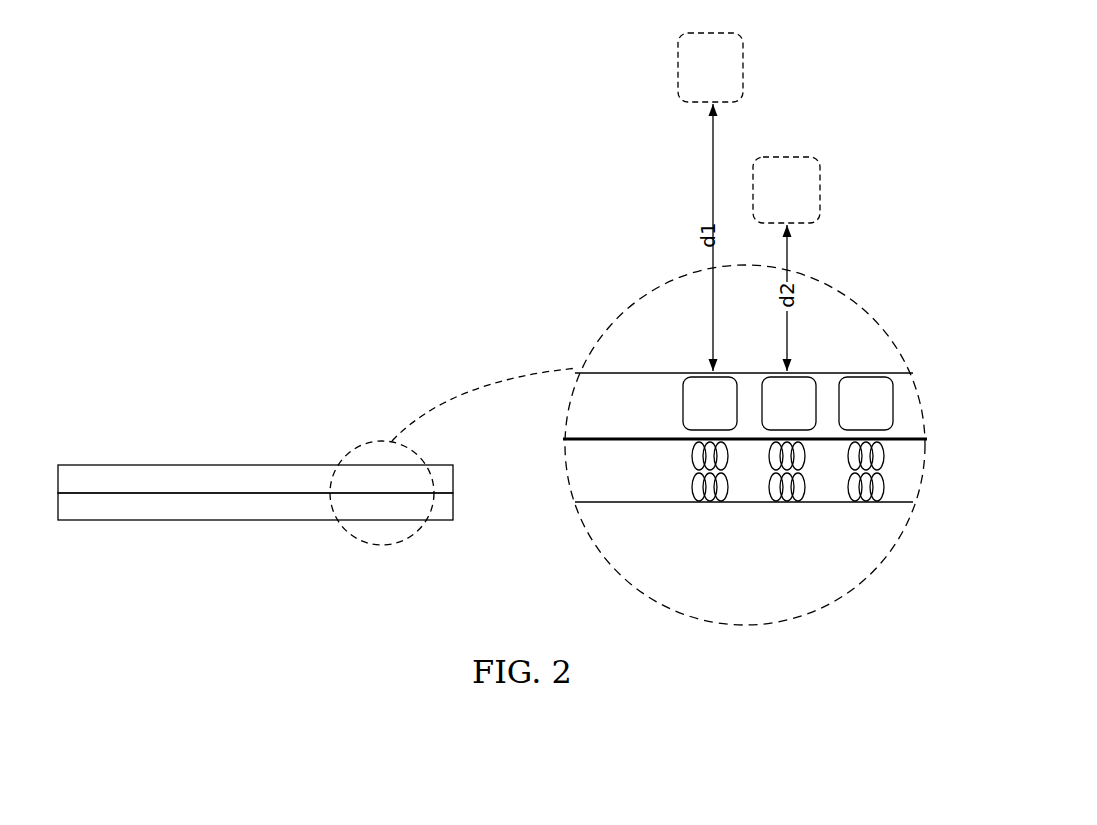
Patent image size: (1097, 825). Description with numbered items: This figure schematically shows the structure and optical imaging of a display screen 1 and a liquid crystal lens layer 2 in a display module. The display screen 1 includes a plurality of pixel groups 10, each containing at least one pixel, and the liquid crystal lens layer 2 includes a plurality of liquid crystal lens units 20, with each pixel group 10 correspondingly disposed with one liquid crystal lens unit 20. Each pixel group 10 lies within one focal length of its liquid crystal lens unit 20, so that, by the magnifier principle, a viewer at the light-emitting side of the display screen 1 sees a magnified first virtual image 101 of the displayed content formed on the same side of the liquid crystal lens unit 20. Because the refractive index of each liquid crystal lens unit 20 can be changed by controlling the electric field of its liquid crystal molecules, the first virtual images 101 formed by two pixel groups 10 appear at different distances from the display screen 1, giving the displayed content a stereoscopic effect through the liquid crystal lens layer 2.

The display screen 1 is at (175, 463).
The liquid crystal lens layer 2 is at (208, 522).
The pixel group 10 is at (725, 373).
The liquid crystal lens unit 20 is at (787, 505).
The first virtual image 101 is at (743, 75).